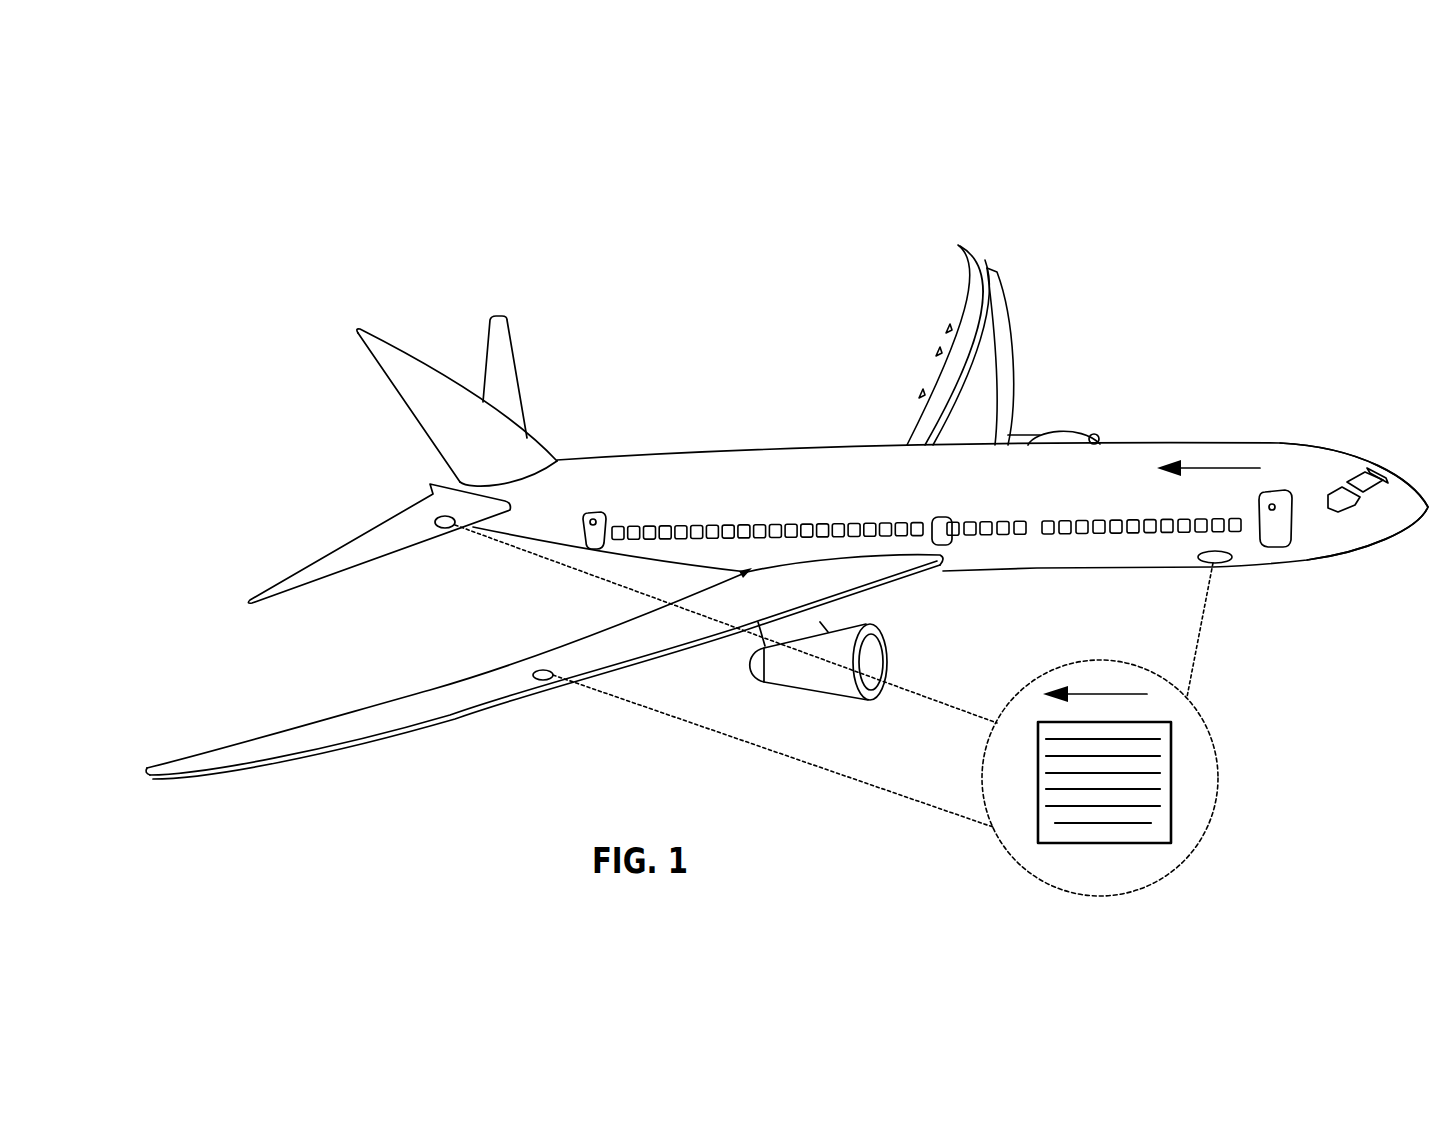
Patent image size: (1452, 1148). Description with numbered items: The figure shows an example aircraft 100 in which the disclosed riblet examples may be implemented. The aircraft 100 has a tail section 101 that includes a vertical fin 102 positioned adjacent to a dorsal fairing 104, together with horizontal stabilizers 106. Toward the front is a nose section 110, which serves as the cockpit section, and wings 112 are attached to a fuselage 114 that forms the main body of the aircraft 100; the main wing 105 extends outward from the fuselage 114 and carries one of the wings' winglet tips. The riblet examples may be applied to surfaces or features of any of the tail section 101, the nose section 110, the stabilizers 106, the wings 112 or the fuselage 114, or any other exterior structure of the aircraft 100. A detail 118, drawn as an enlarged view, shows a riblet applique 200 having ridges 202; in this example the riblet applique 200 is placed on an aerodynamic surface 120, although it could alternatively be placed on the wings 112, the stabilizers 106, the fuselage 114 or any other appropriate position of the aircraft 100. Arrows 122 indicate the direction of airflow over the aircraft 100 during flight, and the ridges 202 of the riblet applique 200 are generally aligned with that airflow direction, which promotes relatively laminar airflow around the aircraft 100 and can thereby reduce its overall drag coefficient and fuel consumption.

The aircraft 100 is at (278, 140).
The tail section 101 is at (333, 305).
The vertical fin 102 is at (427, 400).
The dorsal fairing 104 is at (560, 460).
The wing 105 is at (544, 667).
The horizontal stabilizers 106 is at (507, 318).
The nose section 110 is at (1323, 537).
The wings 112 is at (998, 298).
The fuselage 114 is at (850, 478).
The detail 118 is at (1115, 662).
The aerodynamic surface 120 is at (1117, 881).
The arrows 122 is at (1200, 468).
The riblet applique 200 is at (1171, 733).
The ridges 202 is at (1147, 805).